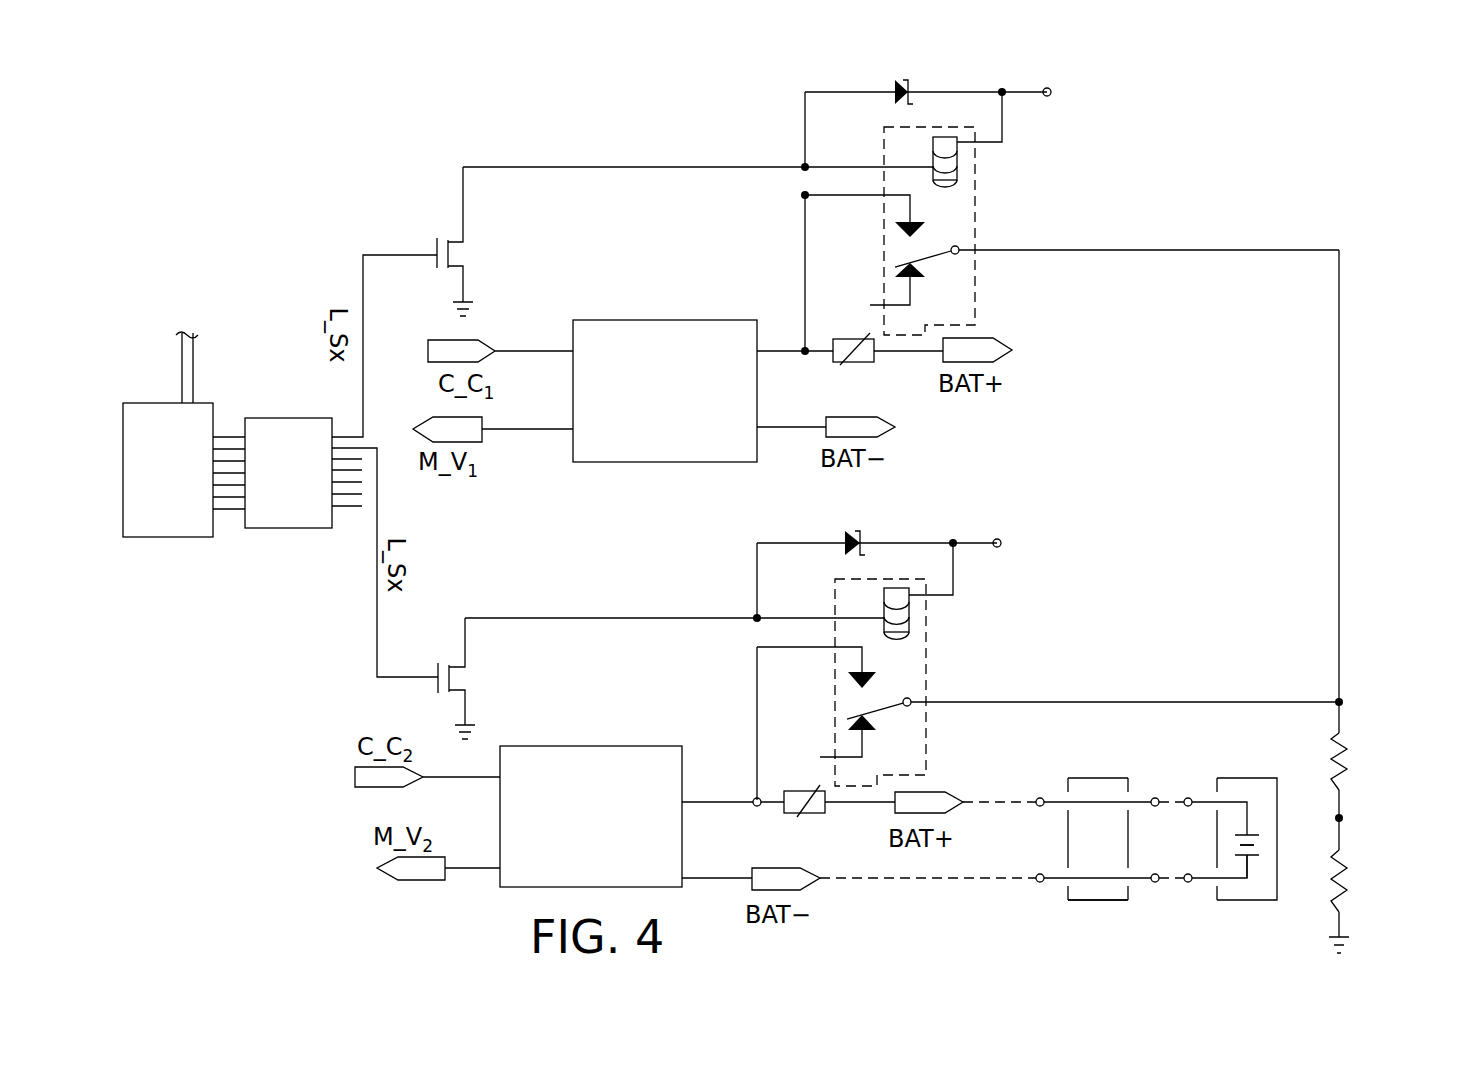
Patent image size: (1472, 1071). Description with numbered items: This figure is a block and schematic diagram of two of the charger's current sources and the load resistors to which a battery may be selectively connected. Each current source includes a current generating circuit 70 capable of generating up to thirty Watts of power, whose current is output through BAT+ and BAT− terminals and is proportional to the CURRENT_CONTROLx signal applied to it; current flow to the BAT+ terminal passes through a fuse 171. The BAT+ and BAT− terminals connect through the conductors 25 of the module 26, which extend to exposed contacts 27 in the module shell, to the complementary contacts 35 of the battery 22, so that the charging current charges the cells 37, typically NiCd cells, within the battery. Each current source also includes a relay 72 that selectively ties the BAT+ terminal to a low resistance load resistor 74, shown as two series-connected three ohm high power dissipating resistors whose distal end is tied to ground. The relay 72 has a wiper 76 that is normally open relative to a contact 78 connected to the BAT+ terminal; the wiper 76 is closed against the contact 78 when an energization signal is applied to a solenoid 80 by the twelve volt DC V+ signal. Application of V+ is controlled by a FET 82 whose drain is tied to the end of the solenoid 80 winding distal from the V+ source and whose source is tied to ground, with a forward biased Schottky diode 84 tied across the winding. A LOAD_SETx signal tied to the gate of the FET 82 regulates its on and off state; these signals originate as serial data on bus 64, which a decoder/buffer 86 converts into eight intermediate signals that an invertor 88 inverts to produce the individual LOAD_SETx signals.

The Schottky diode 84 is at (890, 80).
The solenoid 80 is at (947, 148).
The relay 72 is at (901, 446).
The FET 82 is at (467, 255).
The bus 64 is at (190, 365).
The decoder/buffer 86 is at (152, 520).
The invertor 88 is at (272, 510).
The current generating circuit 70 is at (649, 452).
The contact 78 is at (847, 690).
The wiper 76 is at (873, 712).
The fuse 171 is at (803, 817).
The contacts 27 is at (1155, 797).
The battery 22 is at (1247, 797).
The conductors 25 is at (1088, 802).
The module 26 is at (1090, 900).
The battery contacts 35 is at (1187, 808).
The cells 37 is at (1255, 847).
The load resistor 74 is at (1353, 750).